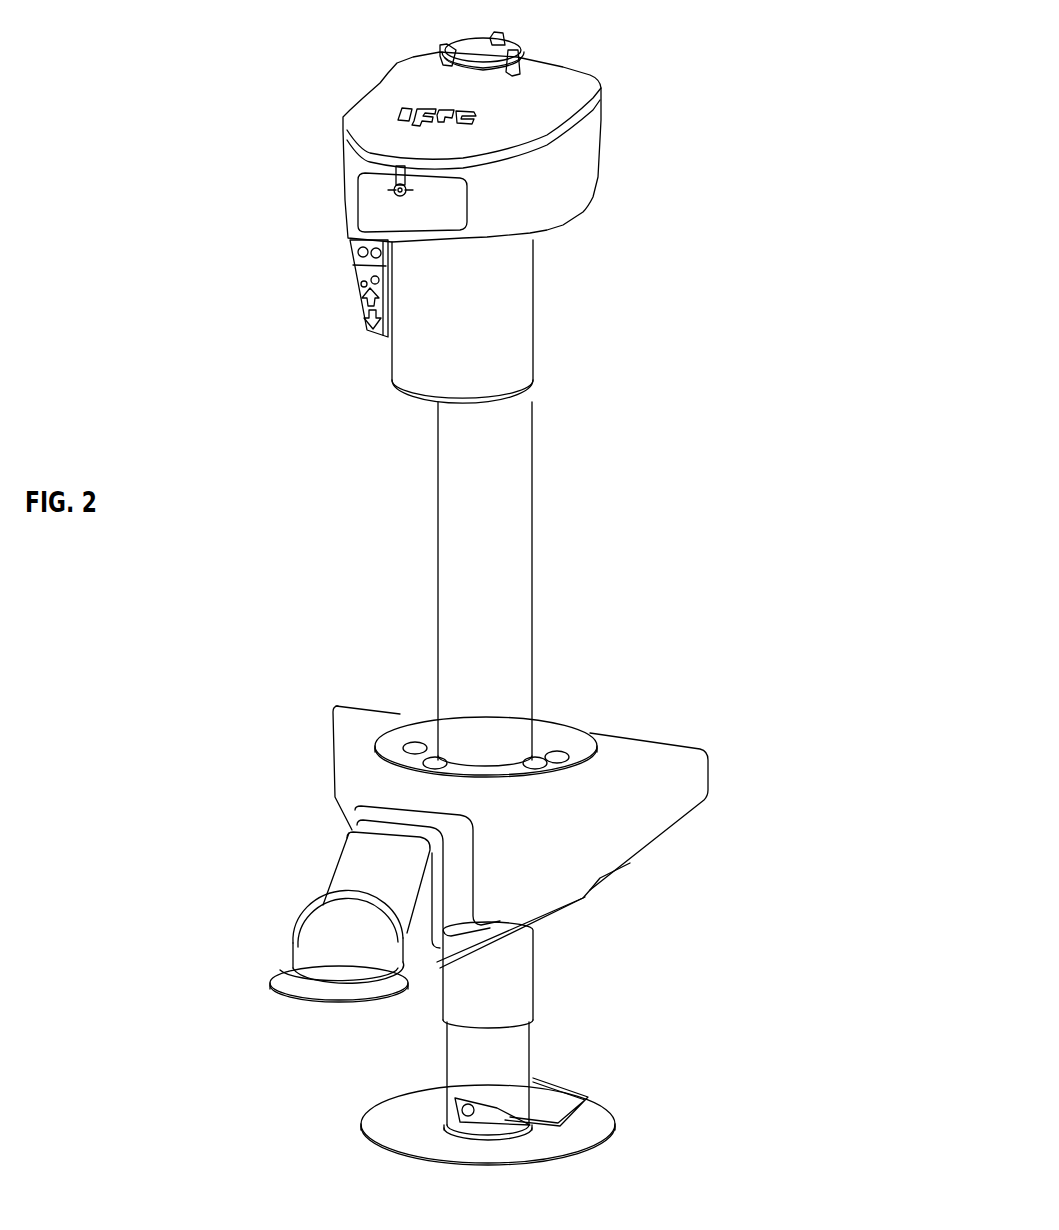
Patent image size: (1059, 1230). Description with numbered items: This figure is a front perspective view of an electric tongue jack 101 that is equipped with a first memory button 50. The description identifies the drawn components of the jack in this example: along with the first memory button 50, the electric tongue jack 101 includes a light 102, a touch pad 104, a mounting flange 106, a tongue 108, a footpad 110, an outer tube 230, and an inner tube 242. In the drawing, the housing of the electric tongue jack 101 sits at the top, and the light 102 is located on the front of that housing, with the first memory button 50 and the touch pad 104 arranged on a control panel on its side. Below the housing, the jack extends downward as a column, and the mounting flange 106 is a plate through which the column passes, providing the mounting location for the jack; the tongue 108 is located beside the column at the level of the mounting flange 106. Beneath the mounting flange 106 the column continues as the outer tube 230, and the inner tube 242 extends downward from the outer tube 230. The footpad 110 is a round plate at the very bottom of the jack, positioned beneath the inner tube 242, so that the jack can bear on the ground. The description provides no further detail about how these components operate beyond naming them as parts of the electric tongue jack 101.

The first memory button 50 is at (350, 249).
The electric tongue jack 101 is at (503, 562).
The light 102 is at (378, 197).
The touch pad 104 is at (368, 307).
The mounting flange 106 is at (410, 730).
The tongue 108 is at (355, 870).
The footpad 110 is at (522, 1147).
The outer tube 230 is at (497, 980).
The inner tube 242 is at (497, 1057).